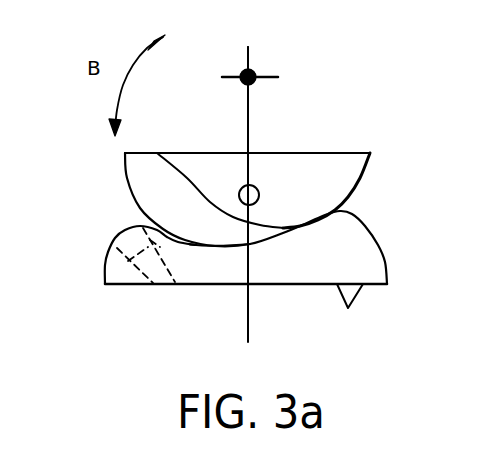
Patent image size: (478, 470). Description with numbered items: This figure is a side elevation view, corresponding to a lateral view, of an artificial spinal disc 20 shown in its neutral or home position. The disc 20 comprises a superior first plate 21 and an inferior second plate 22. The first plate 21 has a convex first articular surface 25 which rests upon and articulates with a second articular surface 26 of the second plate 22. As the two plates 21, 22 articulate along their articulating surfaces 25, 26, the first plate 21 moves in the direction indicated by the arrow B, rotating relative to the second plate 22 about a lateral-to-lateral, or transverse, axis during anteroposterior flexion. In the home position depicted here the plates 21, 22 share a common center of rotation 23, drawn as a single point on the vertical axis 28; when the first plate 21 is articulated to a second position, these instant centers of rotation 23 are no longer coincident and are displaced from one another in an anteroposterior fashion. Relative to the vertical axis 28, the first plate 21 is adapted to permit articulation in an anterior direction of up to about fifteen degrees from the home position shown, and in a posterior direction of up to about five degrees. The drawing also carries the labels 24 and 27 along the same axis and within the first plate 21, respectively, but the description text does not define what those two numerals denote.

The artificial spinal disc 20 is at (413, 148).
The superior first plate 21 is at (308, 165).
The inferior second plate 22 is at (293, 285).
The instant centers of rotation 23 is at (256, 69).
The axis 24 is at (247, 322).
The first articular surface 25 is at (143, 202).
The second articular surface 26 is at (198, 245).
The instantaneous center 27 is at (240, 190).
The vertical axis 28 is at (249, 98).